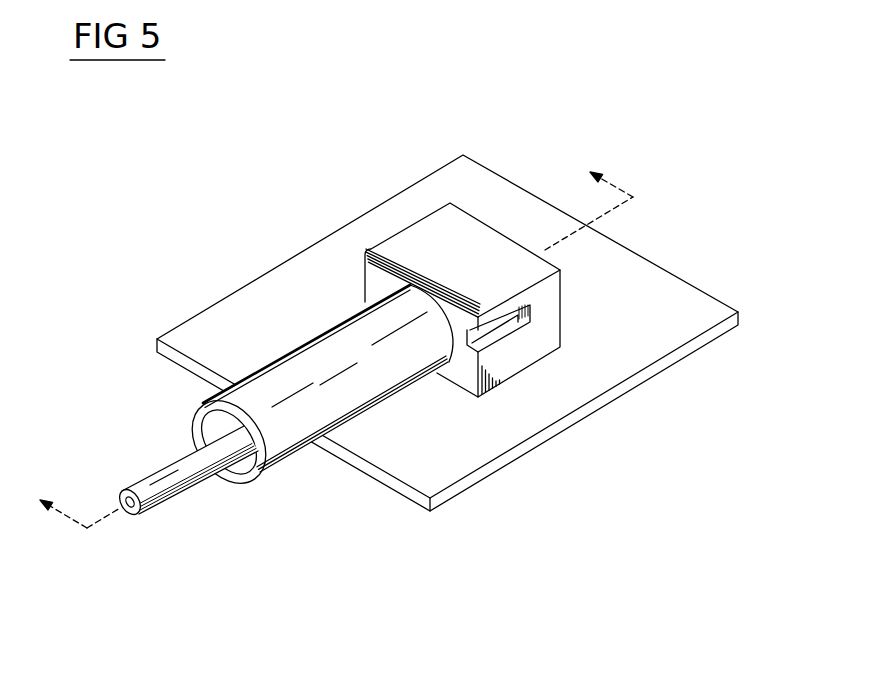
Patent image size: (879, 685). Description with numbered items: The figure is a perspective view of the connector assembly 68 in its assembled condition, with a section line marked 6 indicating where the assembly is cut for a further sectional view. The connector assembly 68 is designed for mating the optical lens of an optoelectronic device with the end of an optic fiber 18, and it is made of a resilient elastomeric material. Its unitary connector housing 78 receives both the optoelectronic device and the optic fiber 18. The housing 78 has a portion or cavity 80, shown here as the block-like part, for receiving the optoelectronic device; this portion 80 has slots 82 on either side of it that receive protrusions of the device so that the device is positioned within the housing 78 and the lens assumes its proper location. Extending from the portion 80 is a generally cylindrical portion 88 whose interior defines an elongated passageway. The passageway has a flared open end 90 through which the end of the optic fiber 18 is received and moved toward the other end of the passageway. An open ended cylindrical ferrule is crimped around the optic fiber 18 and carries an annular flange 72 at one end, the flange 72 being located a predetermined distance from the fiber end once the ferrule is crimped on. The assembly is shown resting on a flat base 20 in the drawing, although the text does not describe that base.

The section line 6- 6 is at (323, 334).
The optic fiber 18 is at (180, 496).
The mounting plate / substrate 20 is at (683, 297).
The connector assembly 68 is at (334, 200).
The annular flange 72 is at (258, 450).
The connector housing 78 is at (334, 306).
The portion or cavity 80 is at (470, 232).
The slots 82 is at (518, 323).
The generally cylindrical portion 88 is at (274, 370).
The flared open end 90 is at (194, 428).